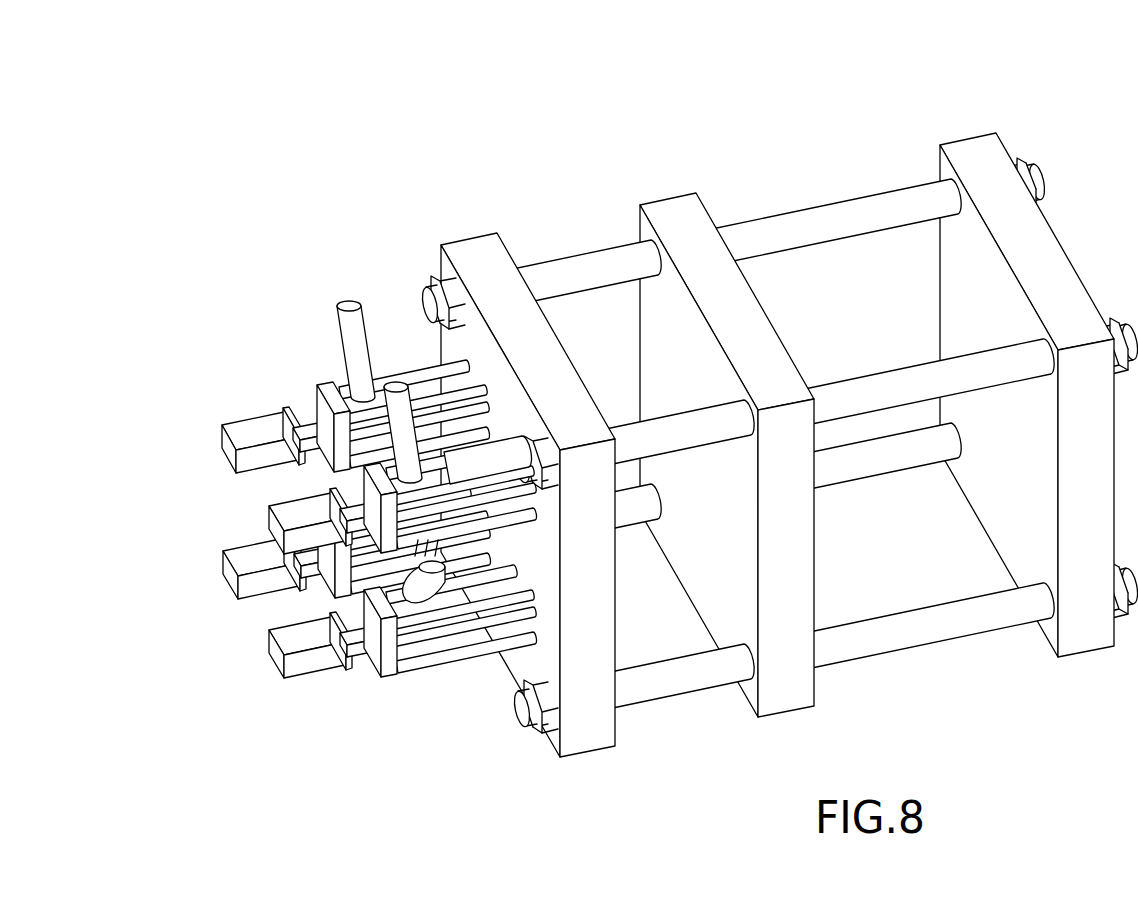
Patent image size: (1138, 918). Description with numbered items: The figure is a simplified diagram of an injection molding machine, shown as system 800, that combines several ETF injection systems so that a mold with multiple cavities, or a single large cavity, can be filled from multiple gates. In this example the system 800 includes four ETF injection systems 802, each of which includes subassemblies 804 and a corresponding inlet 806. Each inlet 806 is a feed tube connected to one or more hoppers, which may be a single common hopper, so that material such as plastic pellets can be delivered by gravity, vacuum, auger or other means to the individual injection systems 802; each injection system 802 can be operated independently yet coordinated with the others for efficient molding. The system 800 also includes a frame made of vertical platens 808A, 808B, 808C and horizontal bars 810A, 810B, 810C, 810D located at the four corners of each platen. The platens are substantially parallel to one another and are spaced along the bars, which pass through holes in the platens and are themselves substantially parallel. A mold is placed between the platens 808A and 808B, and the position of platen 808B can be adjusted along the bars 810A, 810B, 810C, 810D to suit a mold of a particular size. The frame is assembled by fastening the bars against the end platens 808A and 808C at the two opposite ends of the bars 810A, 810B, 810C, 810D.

The system 800 is at (364, 128).
The ETF injection system 802 is at (304, 346).
The subassembly 804 is at (262, 425).
The inlet 806 is at (346, 300).
The vertical platen 808A is at (473, 258).
The vertical platen 808B is at (676, 210).
The vertical platen 808C is at (967, 155).
The horizontal bar 810A is at (596, 272).
The horizontal bar 810B is at (881, 385).
The horizontal bar 810C is at (905, 637).
The horizontal bar 810D is at (857, 457).